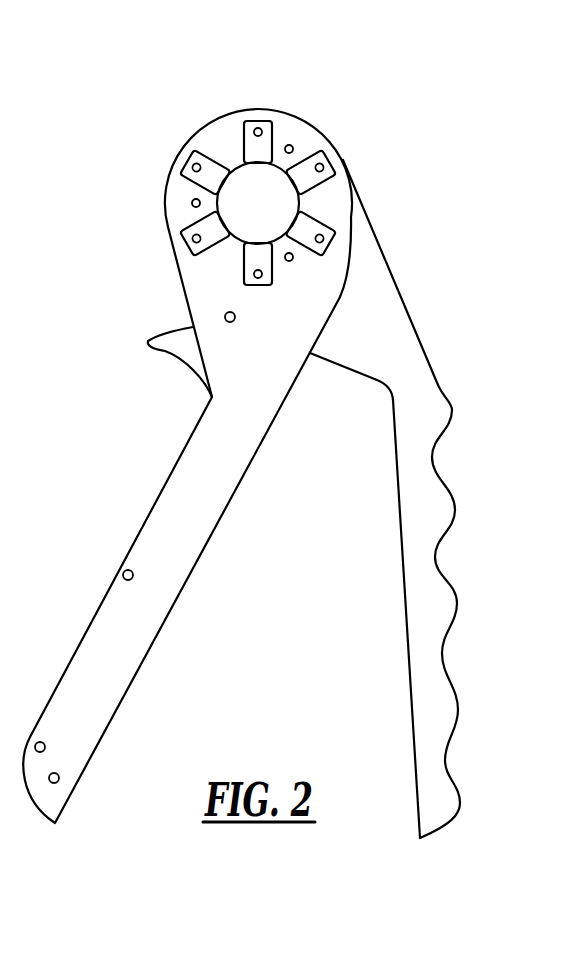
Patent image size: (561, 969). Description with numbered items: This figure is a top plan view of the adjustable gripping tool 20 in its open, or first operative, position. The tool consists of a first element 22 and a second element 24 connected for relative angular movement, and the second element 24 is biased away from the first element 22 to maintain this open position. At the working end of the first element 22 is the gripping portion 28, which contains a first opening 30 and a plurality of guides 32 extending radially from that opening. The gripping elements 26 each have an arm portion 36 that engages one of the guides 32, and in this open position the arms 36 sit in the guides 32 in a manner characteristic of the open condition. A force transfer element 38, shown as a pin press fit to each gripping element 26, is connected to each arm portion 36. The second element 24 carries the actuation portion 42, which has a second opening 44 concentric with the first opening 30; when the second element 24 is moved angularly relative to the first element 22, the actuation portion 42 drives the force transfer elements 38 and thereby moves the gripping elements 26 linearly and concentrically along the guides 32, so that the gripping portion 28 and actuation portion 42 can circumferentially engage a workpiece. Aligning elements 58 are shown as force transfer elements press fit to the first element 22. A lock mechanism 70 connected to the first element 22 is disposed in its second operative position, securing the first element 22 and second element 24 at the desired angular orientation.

The adjustable gripping tool 20 is at (290, 665).
The first element 22 is at (87, 650).
The second element 24 is at (423, 383).
The gripping elements 26 is at (276, 128).
The gripping portion 28 is at (200, 117).
The first opening 30 is at (265, 203).
The guides 32 is at (215, 250).
The arm portion 36 is at (247, 141).
The force transfer element 38 is at (259, 126).
The actuation portion 42 is at (363, 200).
The second opening 44 is at (305, 203).
The aligning elements 58 is at (192, 203).
The lock mechanism 70 is at (164, 356).